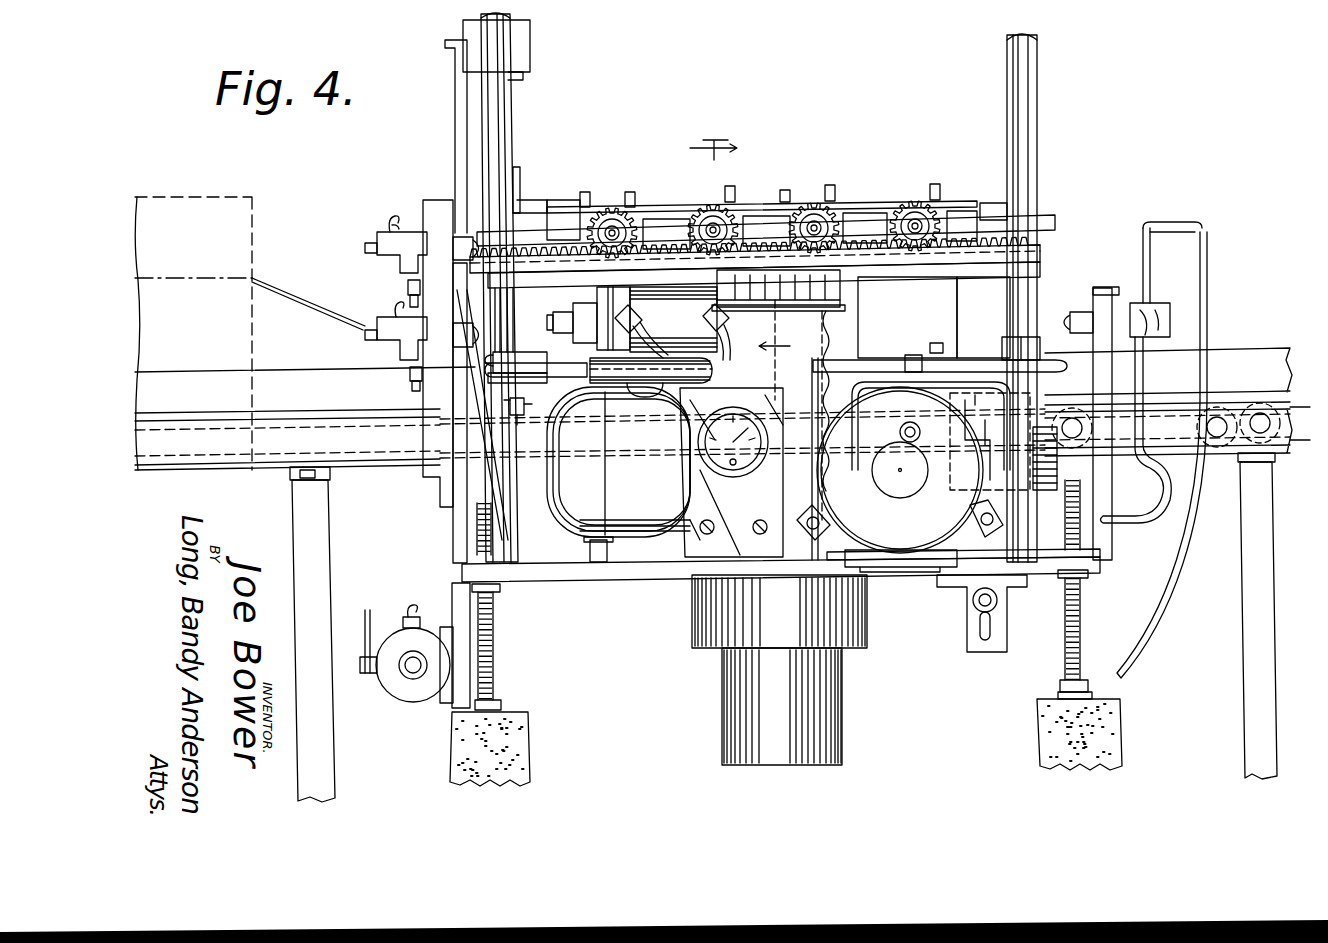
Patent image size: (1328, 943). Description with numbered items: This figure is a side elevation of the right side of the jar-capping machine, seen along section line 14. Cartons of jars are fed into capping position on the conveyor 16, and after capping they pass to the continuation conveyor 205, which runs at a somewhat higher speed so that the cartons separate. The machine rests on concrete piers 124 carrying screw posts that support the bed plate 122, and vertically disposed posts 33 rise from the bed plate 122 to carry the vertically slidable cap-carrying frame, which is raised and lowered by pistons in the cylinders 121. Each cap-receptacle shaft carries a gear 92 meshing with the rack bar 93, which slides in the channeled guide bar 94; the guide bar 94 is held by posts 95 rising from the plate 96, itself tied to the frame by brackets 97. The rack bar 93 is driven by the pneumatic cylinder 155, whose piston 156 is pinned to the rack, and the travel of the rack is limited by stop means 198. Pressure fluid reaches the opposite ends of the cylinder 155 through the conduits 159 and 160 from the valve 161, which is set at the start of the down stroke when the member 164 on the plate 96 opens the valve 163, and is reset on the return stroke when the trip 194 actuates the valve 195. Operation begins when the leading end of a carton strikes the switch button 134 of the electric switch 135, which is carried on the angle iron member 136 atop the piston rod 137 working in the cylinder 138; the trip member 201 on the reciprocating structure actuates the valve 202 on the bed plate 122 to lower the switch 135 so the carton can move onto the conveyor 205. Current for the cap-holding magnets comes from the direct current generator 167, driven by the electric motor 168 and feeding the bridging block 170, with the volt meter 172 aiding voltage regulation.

The section line 14- 14 is at (747, 260).
The conveyor belt 16 is at (352, 420).
The posts 33 is at (487, 103).
The gear 92 is at (614, 206).
The rack bar 93 is at (1040, 247).
The guide bar 94 is at (1040, 260).
The posts 95 is at (1012, 305).
The plate 96 is at (913, 362).
The brackets 97 is at (946, 302).
The cylinders 121 is at (790, 694).
The bed plate 122 is at (677, 575).
The concrete piers 124 is at (528, 764).
The switch button 134 is at (968, 392).
The electric switch 135 is at (1033, 461).
The angle iron member 136 is at (921, 435).
The piston rod 137 is at (918, 456).
The cylinder 138 is at (950, 520).
The pneumatic cylinder 155 is at (653, 335).
The piston 156 is at (704, 320).
The conduit 159 is at (527, 408).
The conduit 160 is at (618, 462).
The valve 161 is at (413, 700).
The valve 163 is at (415, 231).
The member 164 is at (512, 297).
The direct current generator 167 is at (887, 383).
The electric motor 168 is at (637, 535).
The bridging block 170 is at (800, 312).
The volt meter 172 is at (723, 462).
The trip 194 is at (533, 290).
The valve 195 is at (377, 337).
The stop means 198 is at (549, 348).
The trip member 201 is at (1062, 373).
The valve 202 is at (1163, 316).
The continuation conveyor 205 is at (1168, 412).